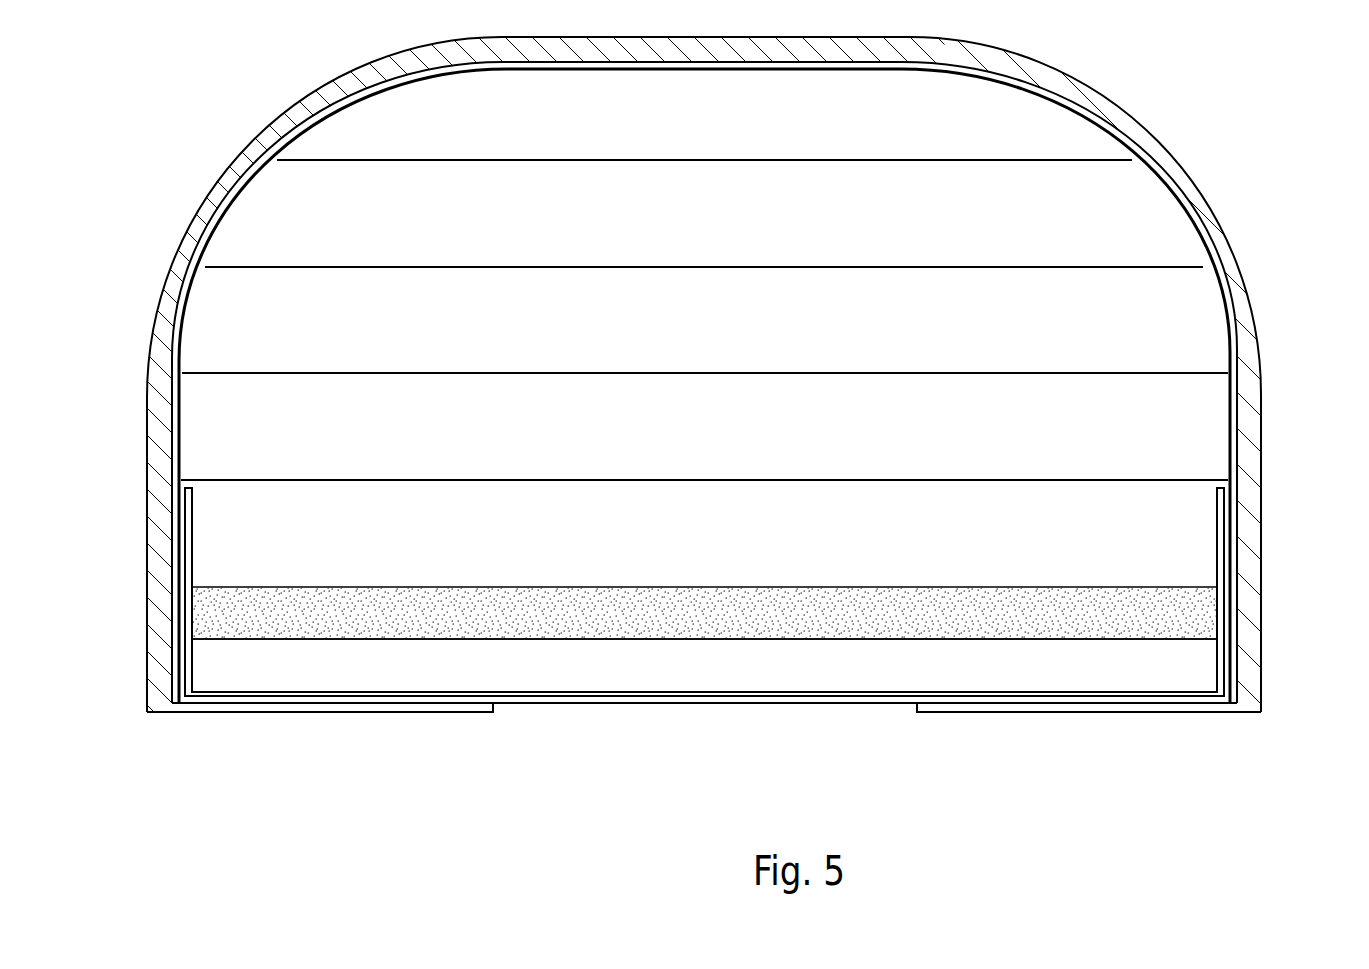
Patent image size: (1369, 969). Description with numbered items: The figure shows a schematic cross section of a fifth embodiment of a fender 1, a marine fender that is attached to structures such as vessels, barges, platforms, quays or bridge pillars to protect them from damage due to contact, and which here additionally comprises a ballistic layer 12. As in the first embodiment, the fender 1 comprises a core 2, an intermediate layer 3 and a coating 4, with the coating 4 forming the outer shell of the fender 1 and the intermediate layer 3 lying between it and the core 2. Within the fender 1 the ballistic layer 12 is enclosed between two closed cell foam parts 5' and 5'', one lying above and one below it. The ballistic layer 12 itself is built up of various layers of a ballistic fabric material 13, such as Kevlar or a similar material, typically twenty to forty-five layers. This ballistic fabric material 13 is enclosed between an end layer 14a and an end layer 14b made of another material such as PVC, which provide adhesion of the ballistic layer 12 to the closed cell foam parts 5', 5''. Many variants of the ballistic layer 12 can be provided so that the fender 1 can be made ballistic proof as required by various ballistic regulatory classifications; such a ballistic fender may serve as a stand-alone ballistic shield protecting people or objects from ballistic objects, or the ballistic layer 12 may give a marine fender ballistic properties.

The fender 1 is at (1182, 92).
The core 2 is at (1173, 334).
The intermediate layer 3 is at (998, 697).
The coating 4 is at (1250, 371).
The closed cell foam part 5' is at (778, 665).
The closed cell foam part 5'' is at (779, 537).
The ballistic layer 12 is at (1204, 610).
The ballistic fabric material 13 is at (635, 617).
The end layer 14a is at (220, 588).
The end layer 14b is at (233, 640).